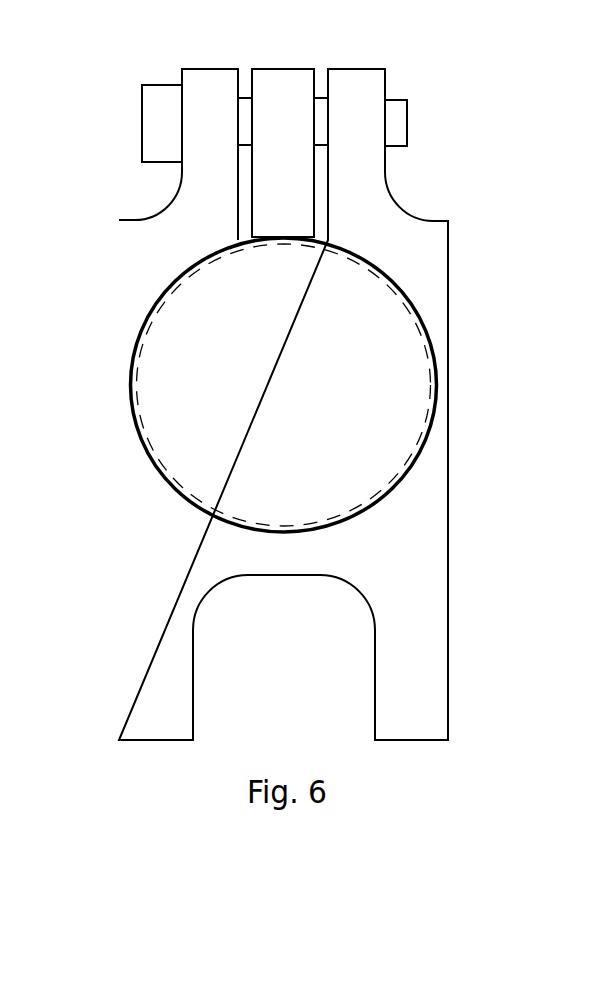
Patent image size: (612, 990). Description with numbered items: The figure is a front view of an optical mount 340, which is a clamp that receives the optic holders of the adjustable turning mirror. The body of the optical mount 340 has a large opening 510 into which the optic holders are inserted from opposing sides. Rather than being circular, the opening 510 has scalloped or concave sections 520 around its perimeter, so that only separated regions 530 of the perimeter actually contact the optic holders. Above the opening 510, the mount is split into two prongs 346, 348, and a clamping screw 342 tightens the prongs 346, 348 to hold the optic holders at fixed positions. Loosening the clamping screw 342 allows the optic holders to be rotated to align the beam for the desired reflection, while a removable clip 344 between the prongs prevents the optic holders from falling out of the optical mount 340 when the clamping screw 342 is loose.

The optical mount 340 is at (96, 39).
The clamping screw 342 is at (142, 118).
The removable clip 344 is at (283, 69).
The prong 346 is at (205, 69).
The prong 348 is at (367, 69).
The opening 510 is at (297, 395).
The scalloped or concave sections 520 is at (137, 391).
The separated regions 530 is at (185, 277).